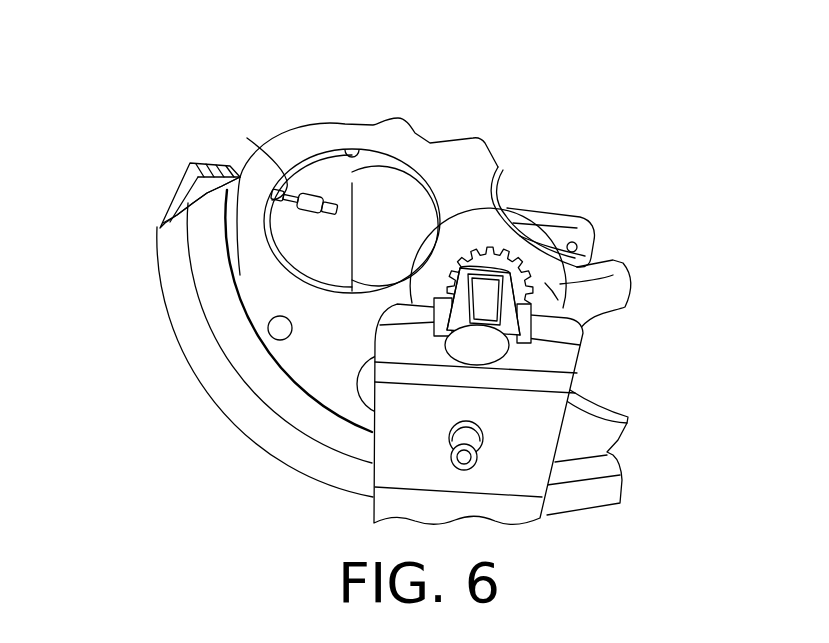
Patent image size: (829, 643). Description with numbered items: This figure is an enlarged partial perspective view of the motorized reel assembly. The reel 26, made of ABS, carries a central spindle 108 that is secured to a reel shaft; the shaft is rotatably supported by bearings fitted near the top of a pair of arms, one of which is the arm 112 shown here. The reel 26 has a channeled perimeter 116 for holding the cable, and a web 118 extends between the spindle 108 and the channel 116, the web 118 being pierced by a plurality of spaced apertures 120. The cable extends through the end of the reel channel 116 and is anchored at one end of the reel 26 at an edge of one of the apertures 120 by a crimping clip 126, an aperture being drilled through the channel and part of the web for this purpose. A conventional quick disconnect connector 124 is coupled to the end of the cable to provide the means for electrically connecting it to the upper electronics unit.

The reel 26 is at (154, 313).
The central spindle 108 is at (626, 272).
The arm 112 is at (400, 432).
The channeled perimeter 116 is at (187, 192).
The web 118 is at (293, 358).
The spaced apertures 120 is at (358, 152).
The quick disconnect connector 124 is at (312, 203).
The crimping clip 126 is at (238, 156).